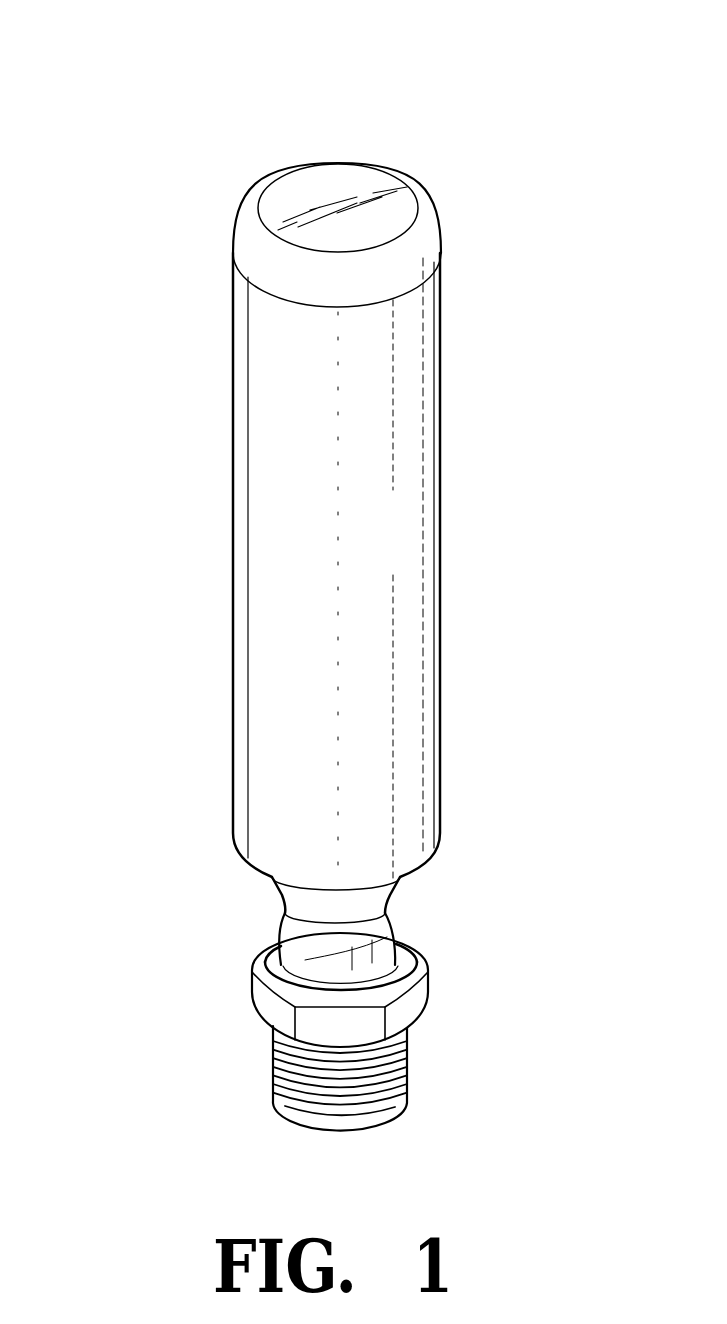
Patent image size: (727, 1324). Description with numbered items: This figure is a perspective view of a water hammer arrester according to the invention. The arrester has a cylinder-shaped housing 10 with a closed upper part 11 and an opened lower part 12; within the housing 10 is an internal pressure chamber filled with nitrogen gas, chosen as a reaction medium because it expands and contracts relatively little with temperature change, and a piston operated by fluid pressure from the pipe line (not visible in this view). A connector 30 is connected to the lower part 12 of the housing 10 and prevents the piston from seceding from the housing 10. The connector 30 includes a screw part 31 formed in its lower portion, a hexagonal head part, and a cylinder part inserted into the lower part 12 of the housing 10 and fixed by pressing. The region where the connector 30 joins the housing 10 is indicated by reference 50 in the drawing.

The housing 10 is at (413, 550).
The closed upper part 11 is at (328, 187).
The opened lower part 12 is at (293, 960).
The connector 30 is at (268, 1000).
The screw part 31 is at (410, 1057).
The ball swivel joint 50 is at (405, 905).